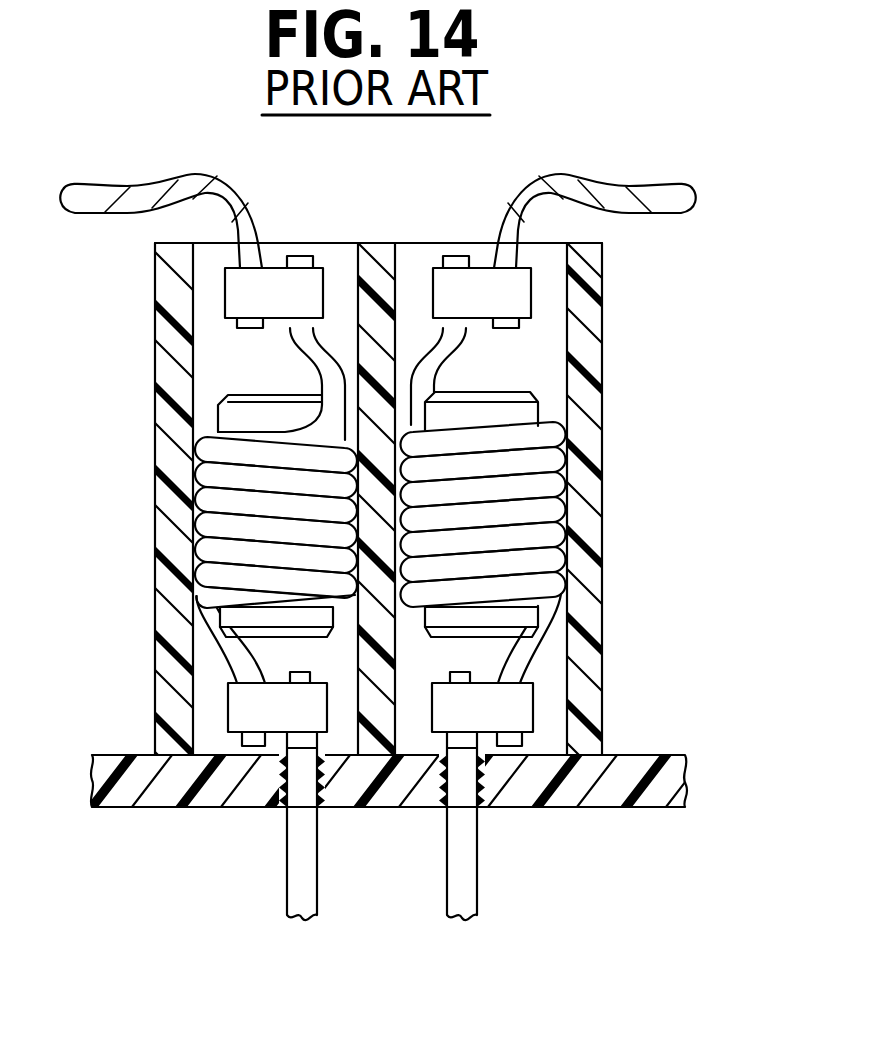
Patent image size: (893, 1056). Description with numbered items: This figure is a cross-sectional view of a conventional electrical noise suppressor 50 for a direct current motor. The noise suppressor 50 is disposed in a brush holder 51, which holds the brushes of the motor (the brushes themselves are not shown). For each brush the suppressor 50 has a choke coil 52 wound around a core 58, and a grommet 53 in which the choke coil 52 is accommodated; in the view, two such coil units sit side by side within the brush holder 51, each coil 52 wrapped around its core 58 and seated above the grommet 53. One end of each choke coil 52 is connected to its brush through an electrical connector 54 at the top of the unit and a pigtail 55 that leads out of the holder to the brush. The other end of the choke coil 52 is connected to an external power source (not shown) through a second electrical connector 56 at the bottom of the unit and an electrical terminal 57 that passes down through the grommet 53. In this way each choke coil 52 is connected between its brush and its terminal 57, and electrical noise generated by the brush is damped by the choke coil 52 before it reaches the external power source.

The electrical noise suppressor 50 is at (712, 285).
The brush holder 51 is at (597, 703).
The choke coil 52 is at (207, 522).
The grommet 53 is at (620, 793).
The electrical connector 54 is at (274, 280).
The pigtail 55 is at (83, 213).
The electrical connector 56 is at (237, 716).
The electrical terminal 57 is at (317, 905).
The core 58 is at (256, 414).